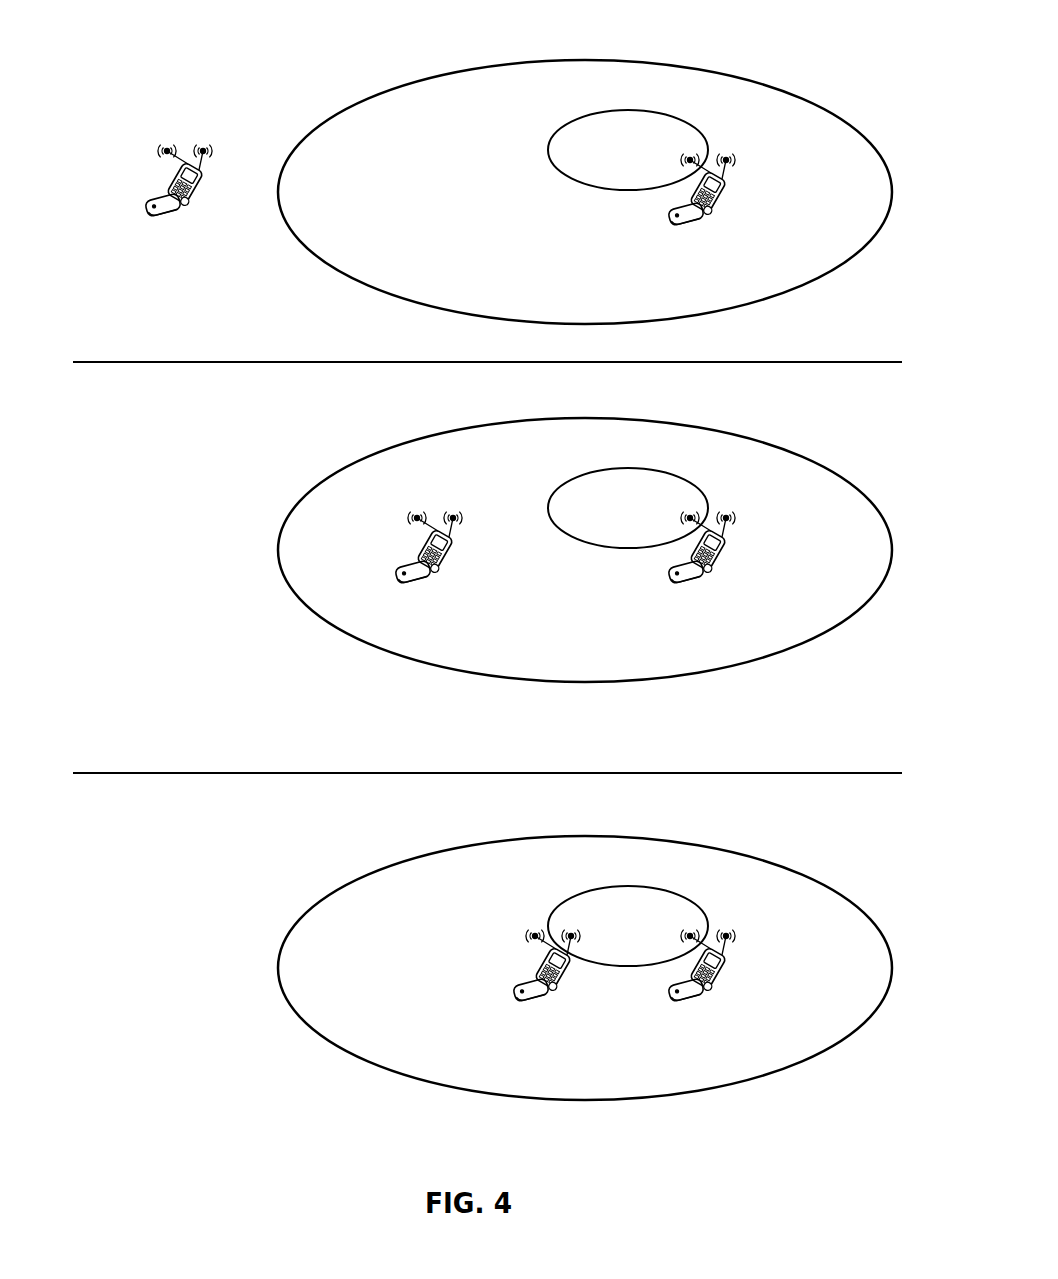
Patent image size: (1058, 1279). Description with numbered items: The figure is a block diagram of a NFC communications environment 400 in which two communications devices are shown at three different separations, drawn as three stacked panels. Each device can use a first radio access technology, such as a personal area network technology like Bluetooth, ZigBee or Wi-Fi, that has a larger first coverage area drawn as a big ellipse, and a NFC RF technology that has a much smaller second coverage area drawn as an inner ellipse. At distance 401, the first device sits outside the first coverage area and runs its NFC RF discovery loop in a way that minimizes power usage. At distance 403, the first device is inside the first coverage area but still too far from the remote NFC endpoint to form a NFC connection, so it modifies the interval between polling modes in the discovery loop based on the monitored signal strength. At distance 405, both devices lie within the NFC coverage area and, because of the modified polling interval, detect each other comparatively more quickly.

The NFC communications environment 400 is at (792, 38).
The first distance 401 is at (163, 65).
The second distance 403 is at (160, 442).
The third distance 405 is at (160, 845).